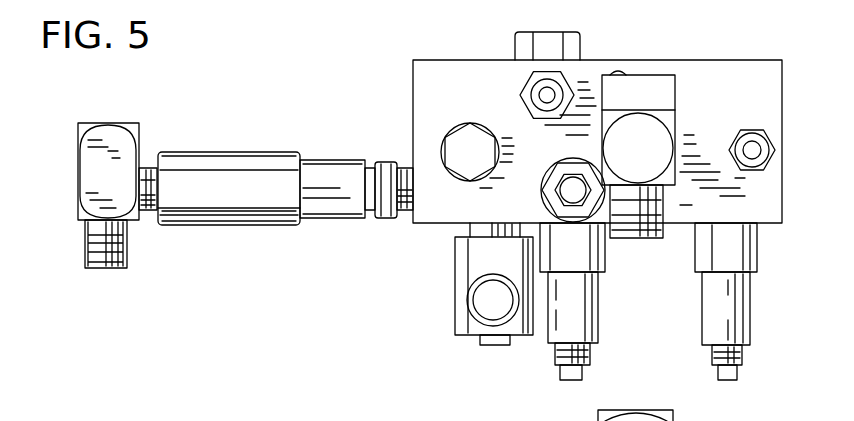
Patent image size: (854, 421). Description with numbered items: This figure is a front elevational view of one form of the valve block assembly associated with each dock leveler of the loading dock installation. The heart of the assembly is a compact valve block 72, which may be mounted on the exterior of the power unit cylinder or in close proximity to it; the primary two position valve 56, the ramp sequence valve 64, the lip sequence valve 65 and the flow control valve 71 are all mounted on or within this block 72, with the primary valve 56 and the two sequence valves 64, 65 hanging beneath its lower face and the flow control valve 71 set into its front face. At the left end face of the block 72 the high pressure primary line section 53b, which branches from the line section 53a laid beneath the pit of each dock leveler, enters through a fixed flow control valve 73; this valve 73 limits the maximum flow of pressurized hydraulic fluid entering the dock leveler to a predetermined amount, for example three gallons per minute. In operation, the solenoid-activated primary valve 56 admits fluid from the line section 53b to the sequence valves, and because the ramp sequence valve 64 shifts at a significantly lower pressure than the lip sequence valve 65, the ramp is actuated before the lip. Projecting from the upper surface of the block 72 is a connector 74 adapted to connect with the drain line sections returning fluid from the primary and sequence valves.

The line section 53a is at (83, 252).
The line section 53b is at (150, 210).
The primary two position valve 56 is at (455, 272).
The ramp sequence valve 64 is at (584, 299).
The lip sequence valve 65 is at (698, 298).
The flow control valve 71 is at (558, 186).
The valve block 72 is at (413, 84).
The fixed flow control valve 73 is at (240, 225).
The connector 74 is at (635, 120).